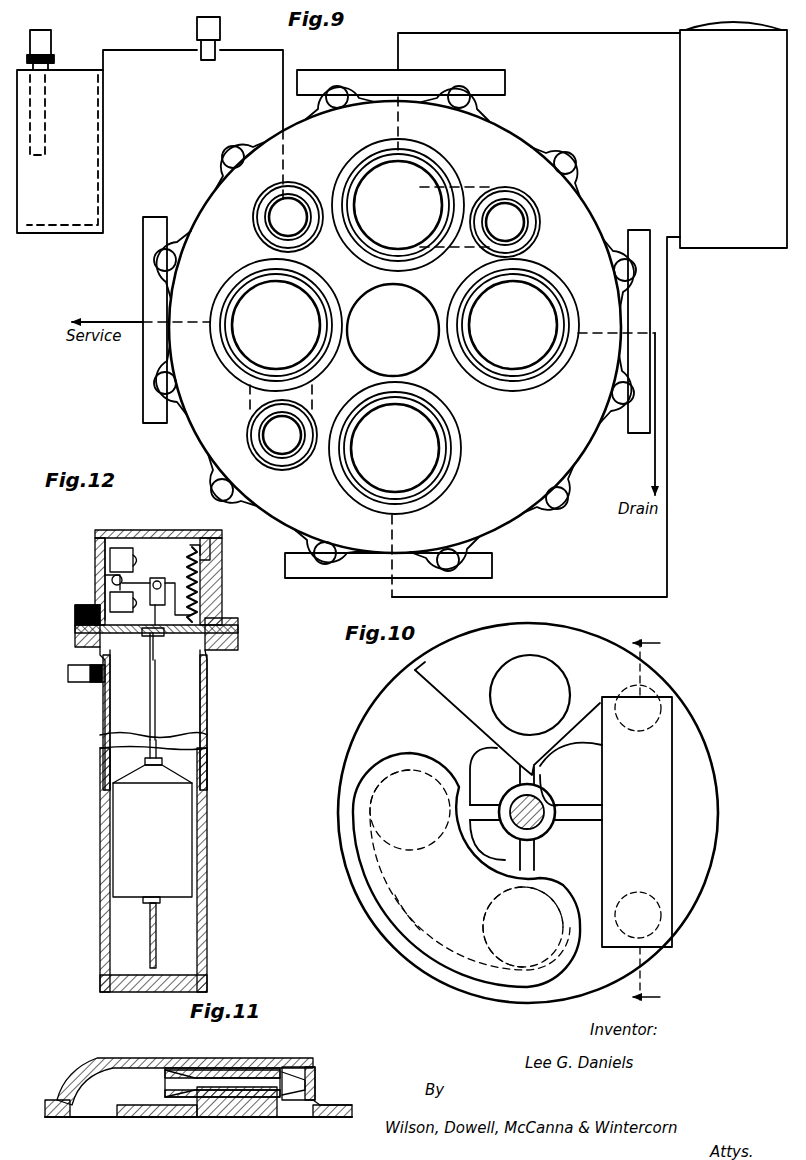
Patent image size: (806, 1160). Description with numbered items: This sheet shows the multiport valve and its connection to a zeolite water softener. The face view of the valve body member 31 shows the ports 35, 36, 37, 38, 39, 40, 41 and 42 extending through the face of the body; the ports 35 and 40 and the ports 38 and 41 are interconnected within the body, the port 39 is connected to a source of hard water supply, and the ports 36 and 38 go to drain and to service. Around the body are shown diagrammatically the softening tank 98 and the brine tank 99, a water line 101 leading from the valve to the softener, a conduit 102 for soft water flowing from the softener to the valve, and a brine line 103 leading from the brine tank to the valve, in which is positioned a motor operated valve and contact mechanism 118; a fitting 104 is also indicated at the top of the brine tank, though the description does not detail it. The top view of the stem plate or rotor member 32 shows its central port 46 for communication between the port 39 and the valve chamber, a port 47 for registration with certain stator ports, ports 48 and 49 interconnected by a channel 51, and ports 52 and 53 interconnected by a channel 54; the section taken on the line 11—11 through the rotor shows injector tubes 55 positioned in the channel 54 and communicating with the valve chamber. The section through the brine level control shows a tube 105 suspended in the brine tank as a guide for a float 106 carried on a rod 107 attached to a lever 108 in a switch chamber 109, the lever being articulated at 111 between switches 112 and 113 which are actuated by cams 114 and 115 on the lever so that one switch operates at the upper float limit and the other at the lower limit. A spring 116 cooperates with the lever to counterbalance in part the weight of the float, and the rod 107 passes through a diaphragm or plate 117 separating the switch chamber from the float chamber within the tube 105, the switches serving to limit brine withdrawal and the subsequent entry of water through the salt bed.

In FIG. 9, the valve body member 31 is at (588, 204).
In FIG. 9, the port 35 is at (398, 205).
In FIG. 9, the port 36 is at (513, 325).
In FIG. 9, the port 37 is at (395, 448).
In FIG. 9, the port 38 is at (276, 325).
In FIG. 9, the port 39 is at (393, 330).
In FIG. 9, the port 40 is at (500, 212).
In FIG. 9, the port 41 is at (288, 452).
In FIG. 9, the port 42 is at (290, 206).
In FIG. 9, the softening tank 98 is at (733, 135).
In FIG. 9, the brine tank 99 is at (60, 151).
In FIG. 9, the water line 101 is at (494, 33).
In FIG. 9, the conduit 102 is at (668, 350).
In FIG. 9, the brine line 103 is at (240, 50).
In FIG. 9, the fitting 104 is at (52, 31).
In FIG. 9, the motor operated valve and contact mechanism 118 is at (196, 30).
In FIG. 12, the tube 105 is at (207, 770).
In FIG. 12, the float 106 is at (183, 830).
In FIG. 12, the rod 107 is at (185, 705).
In FIG. 12, the lever 108 is at (143, 582).
In FIG. 12, the switch chamber 109 is at (137, 540).
In FIG. 12, the articulation 111 is at (110, 580).
In FIG. 12, the switch 112 is at (118, 546).
In FIG. 12, the switch 113 is at (78, 598).
In FIG. 12, the cam 114 is at (95, 577).
In FIG. 12, the cam 115 is at (110, 598).
In FIG. 12, the spring 116 is at (200, 585).
In FIG. 12, the diaphragm or plate 117 is at (238, 630).
In FIG. 10, the stem plate or rotor member 32 is at (598, 645).
In FIG. 11, the stem plate or rotor member 32 is at (57, 1100).
In FIG. 10, the central port 46 is at (508, 766).
In FIG. 10, the port 47 is at (530, 695).
In FIG. 10, the port 48 is at (360, 825).
In FIG. 10, the port 49 is at (508, 965).
In FIG. 10, the channel 51 is at (395, 895).
In FIG. 10, the port 52 is at (662, 698).
In FIG. 11, the port 52 is at (308, 1118).
In FIG. 10, the port 53 is at (661, 920).
In FIG. 11, the port 53 is at (92, 1110).
In FIG. 11, the channel 54 is at (128, 1073).
In FIG. 11, the injector tubes 55 is at (297, 1090).
In FIG. 10, the section line 11 is at (650, 825).